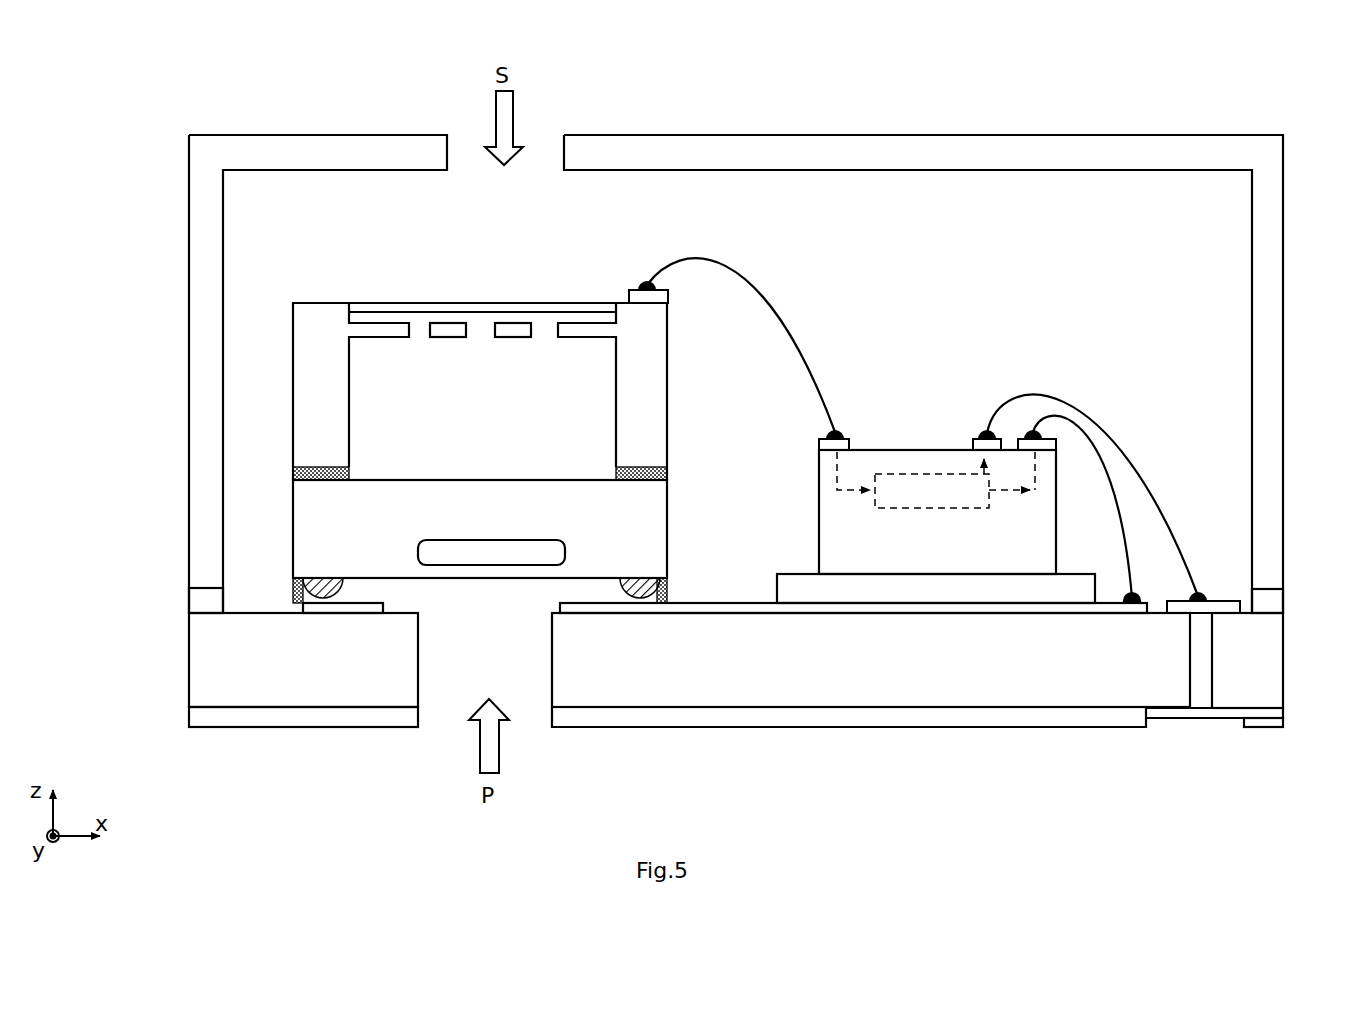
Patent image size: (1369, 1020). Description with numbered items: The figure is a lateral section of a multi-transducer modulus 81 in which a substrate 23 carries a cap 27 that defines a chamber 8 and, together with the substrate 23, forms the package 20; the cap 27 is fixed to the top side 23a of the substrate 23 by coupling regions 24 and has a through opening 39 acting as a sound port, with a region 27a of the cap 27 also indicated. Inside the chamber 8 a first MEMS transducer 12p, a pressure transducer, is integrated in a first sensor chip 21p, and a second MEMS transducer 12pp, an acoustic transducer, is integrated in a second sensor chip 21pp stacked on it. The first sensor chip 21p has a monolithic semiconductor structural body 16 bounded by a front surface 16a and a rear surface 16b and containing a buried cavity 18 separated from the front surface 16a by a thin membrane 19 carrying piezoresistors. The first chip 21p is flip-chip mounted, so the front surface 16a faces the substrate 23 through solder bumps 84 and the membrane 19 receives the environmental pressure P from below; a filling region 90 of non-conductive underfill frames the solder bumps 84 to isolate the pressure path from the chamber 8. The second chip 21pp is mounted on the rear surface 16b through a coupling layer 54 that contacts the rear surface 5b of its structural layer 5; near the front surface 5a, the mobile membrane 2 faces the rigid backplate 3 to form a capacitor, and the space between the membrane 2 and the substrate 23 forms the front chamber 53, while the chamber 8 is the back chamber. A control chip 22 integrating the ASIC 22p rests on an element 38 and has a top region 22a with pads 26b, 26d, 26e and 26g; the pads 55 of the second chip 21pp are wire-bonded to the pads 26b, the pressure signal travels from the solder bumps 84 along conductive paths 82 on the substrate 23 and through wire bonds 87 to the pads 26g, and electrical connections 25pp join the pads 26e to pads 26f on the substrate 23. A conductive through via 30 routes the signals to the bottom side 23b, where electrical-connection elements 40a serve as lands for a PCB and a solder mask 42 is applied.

The multi-transducer modulus 81 is at (146, 155).
The package 20 is at (184, 310).
The cap 27 is at (313, 150).
The through opening 39 is at (544, 150).
The chamber 8 is at (1202, 195).
The inner surface of housing wall 27a is at (1048, 173).
The front surface of structural layer 5a is at (311, 300).
The membrane 2 is at (511, 305).
The pads of second sensor chip 55 is at (668, 297).
The second MEMS transducer 12pp is at (300, 377).
The front chamber 53 is at (379, 363).
The backplate 3 is at (452, 339).
The rear surface of structural body 16b is at (571, 476).
The structural layer 5 is at (480, 391).
The second sensor chip 21pp is at (671, 358).
The coupling layer 54 is at (293, 473).
The buried cavity 18 is at (459, 548).
The structural body 16 is at (480, 529).
The first sensor chip 21p is at (671, 522).
The first MEMS transducer 12p is at (300, 544).
The rear surface of structural layer 5b is at (328, 481).
The top side of substrate 23a is at (247, 609).
The coupling regions 24 is at (193, 601).
The solder bumps 84 is at (346, 589).
The filling region 90 is at (300, 604).
The membrane 19 is at (507, 579).
The front surface of structural body 16a is at (537, 582).
The substrate 23 is at (193, 673).
The bottom side of substrate 23b is at (268, 708).
The conductive paths 82 is at (353, 607).
The solder mask 42 is at (590, 711).
The control chip 22 is at (815, 536).
The ASIC top surface 22a is at (908, 446).
The ASIC 22p is at (942, 474).
The pads of control chip 26b is at (838, 434).
The pads of control chip 26d is at (819, 446).
The pads of control chip 26e is at (985, 435).
The pads of control chip 26g is at (1031, 435).
The pads on substrate 26f is at (1225, 600).
The electrical connections 25pp is at (1133, 441).
The wire bonds 87 is at (1123, 536).
The die attach pedestal 38 is at (1025, 592).
The electrical-connection elements 40a is at (1172, 712).
The conductive through via 30 is at (1200, 667).